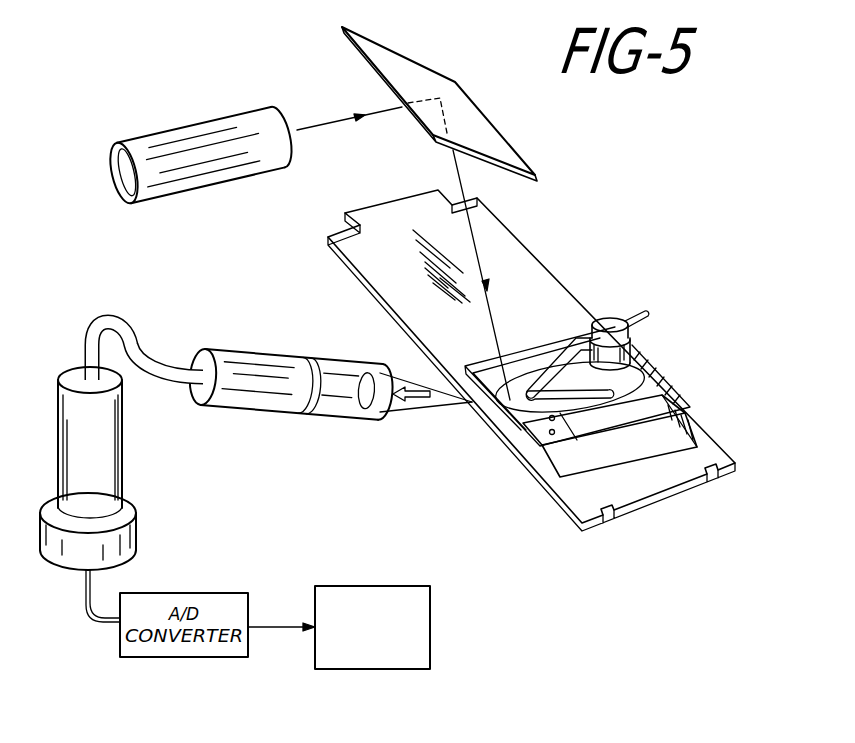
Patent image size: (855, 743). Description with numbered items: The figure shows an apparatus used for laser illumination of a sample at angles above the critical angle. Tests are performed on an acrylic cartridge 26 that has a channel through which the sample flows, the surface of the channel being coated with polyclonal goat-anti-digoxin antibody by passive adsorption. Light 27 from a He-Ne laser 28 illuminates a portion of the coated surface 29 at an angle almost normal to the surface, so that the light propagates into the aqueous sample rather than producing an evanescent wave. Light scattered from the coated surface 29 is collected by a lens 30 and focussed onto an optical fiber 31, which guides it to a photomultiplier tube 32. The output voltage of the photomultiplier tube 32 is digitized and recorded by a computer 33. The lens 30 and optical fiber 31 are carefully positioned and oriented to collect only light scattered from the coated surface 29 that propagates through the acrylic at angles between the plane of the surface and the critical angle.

The acrylic cartridge 26 is at (655, 370).
The light 27 is at (450, 152).
The He-Ne laser 28 is at (186, 126).
The coated surface 29 is at (510, 397).
The lens 30 is at (337, 366).
The optical fiber 31 is at (125, 318).
The photomultiplier tube 32 is at (122, 462).
The computer 33 is at (432, 638).